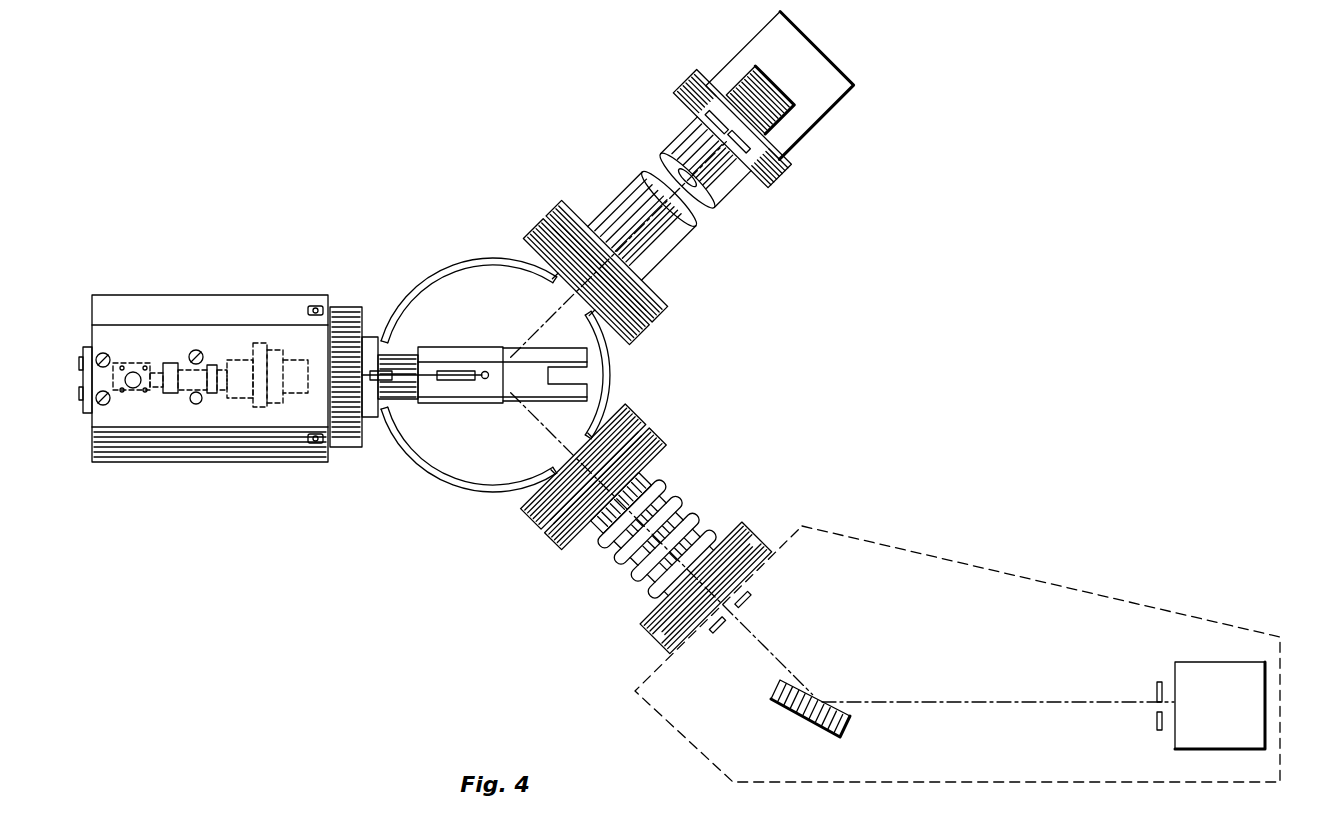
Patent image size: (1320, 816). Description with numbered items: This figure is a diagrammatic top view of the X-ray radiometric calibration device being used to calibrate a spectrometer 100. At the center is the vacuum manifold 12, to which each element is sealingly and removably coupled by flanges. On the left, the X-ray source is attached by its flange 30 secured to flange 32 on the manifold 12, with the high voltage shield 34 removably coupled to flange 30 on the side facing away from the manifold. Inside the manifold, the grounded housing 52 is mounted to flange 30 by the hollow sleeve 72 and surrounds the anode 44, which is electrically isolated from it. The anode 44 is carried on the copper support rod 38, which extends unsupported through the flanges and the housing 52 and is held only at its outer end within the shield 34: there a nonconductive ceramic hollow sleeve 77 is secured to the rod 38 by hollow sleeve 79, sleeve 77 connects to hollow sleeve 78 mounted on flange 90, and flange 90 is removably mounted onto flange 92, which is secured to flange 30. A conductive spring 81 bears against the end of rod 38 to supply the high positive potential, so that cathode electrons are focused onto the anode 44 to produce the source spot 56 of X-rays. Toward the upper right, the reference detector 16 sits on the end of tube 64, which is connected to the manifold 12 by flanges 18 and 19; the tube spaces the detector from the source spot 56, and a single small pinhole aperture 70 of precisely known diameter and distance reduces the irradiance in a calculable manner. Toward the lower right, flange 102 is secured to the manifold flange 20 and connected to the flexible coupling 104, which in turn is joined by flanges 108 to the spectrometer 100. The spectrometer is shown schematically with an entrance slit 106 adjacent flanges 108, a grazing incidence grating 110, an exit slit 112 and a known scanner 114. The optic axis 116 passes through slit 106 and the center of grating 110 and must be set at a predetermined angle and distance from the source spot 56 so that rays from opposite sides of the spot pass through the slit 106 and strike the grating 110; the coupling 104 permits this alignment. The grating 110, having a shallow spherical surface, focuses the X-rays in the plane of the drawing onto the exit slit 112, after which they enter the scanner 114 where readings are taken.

The vacuum manifold 12 is at (462, 261).
The reference detector 16 is at (775, 95).
The flange 18 is at (650, 300).
The flange 19 is at (630, 320).
The flange 20 is at (625, 418).
The flange 30 is at (313, 337).
The flange 32 is at (345, 307).
The high voltage shield 34 is at (125, 296).
The support rod 38 is at (157, 370).
The anode 44 is at (460, 366).
The grounded housing 52 is at (492, 404).
The source spot 56 is at (488, 370).
The tube 64 is at (658, 238).
The pinhole aperture 70 is at (695, 140).
The hollow sleeve 72 is at (393, 405).
The nonconductive hollow sleeve 77 is at (190, 380).
The hollow sleeve 78 is at (199, 402).
The hollow sleeve 79 is at (170, 365).
The conductive spring 81 is at (125, 392).
The flange 90 is at (246, 394).
The flange 92 is at (282, 396).
The spectrometer 100 is at (1020, 576).
The flange 102 is at (655, 446).
The flexible coupling 104 is at (688, 505).
The entrance slit 106 is at (748, 606).
The flanges 108 is at (752, 562).
The grazing incidence grating 110 is at (801, 719).
The exit slit 112 is at (1156, 722).
The scanner 114 is at (1192, 714).
The optic axis 116 is at (768, 656).